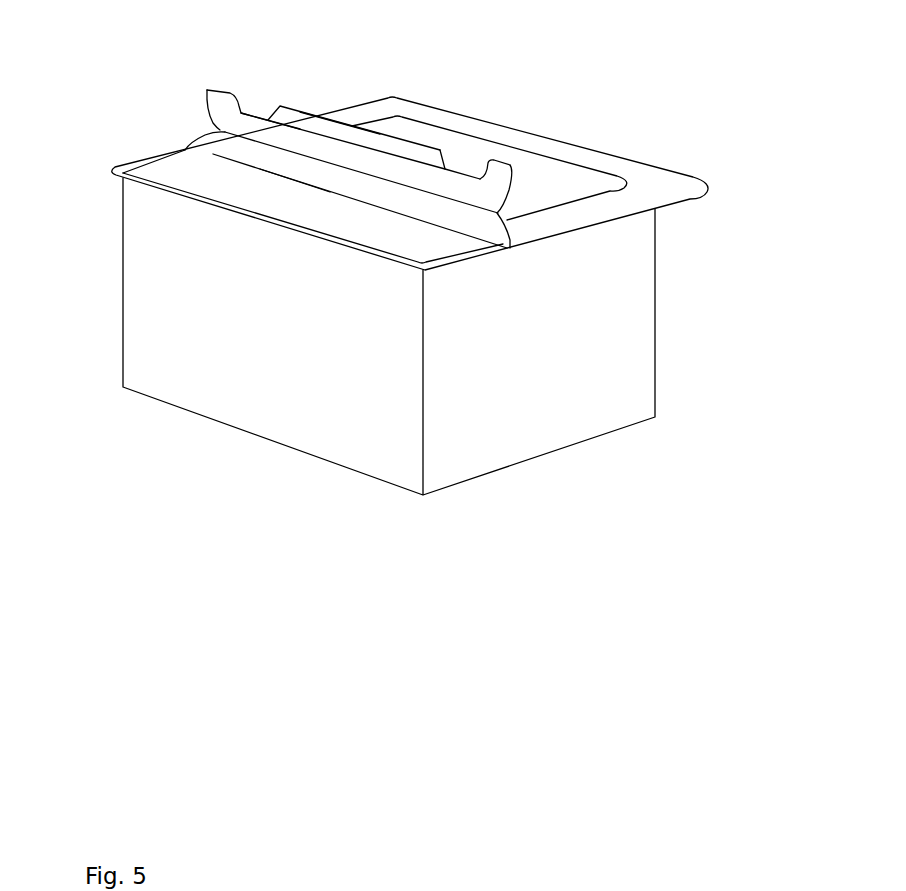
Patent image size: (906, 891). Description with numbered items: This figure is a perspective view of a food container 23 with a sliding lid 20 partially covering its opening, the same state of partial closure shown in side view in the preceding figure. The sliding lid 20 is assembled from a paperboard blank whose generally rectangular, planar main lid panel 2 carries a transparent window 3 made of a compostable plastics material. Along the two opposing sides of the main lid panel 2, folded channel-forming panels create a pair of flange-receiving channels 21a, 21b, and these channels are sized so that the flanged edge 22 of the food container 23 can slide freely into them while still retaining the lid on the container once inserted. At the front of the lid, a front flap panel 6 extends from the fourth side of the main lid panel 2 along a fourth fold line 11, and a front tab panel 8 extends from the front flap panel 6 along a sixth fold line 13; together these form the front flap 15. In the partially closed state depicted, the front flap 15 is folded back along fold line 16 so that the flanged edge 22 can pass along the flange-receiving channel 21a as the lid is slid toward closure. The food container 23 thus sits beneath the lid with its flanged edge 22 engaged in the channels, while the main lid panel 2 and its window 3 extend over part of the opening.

The main lid panel 2 is at (527, 147).
The transparent window 3 is at (418, 132).
The front flap panel 6 is at (490, 185).
The front tab panel 8 is at (347, 130).
The fourth fold line 11 is at (243, 137).
The sixth fold line 13 is at (382, 150).
The front flap 15 is at (210, 117).
The fold line 16 is at (288, 180).
The sliding lid 20 is at (700, 200).
The flange-receiving channel 21a is at (186, 150).
The flange-receiving channel 21b is at (512, 250).
The flanged edge 22 is at (118, 167).
The food container 23 is at (122, 265).